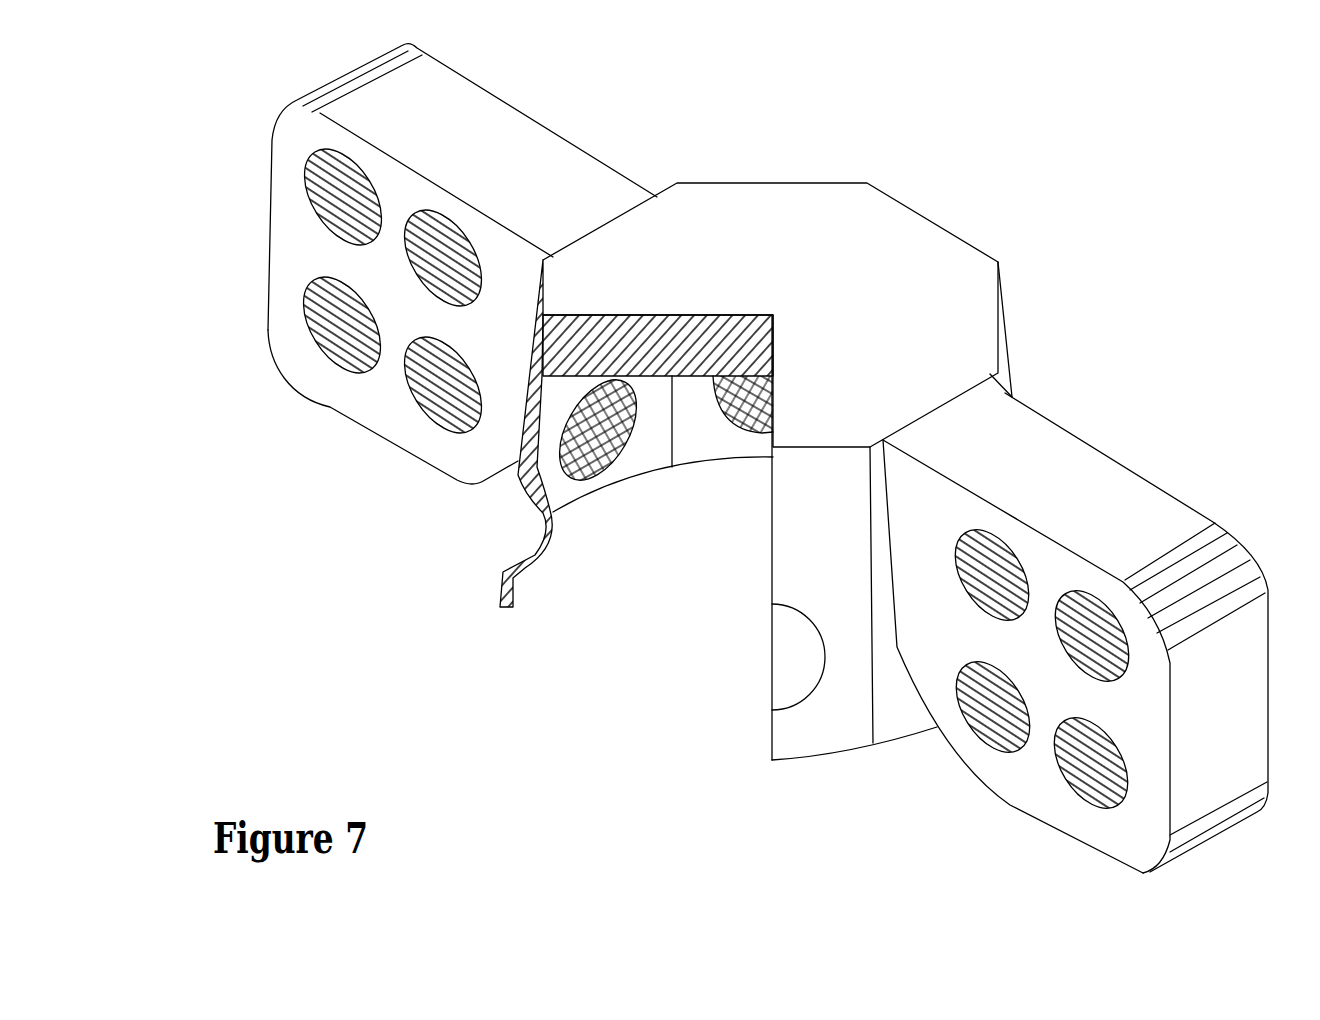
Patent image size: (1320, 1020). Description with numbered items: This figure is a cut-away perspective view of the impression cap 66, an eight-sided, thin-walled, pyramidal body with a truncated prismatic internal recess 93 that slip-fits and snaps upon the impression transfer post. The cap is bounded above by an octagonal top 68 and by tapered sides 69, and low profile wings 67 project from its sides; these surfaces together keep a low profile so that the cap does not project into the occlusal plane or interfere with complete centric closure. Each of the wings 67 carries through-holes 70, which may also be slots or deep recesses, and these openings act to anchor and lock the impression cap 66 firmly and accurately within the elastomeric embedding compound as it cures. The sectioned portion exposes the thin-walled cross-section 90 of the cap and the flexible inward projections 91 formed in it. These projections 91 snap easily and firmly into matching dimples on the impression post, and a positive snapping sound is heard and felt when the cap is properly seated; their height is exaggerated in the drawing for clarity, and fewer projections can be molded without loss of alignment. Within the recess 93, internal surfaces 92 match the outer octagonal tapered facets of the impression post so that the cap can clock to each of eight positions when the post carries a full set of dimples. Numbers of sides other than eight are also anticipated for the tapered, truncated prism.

The impression cap 66 is at (955, 210).
The wings 67 is at (477, 123).
The octagonal top 68 is at (760, 228).
The tapered sides 69 is at (818, 738).
The through-holes 70 is at (325, 357).
The thin-walled cross-section 90 is at (537, 517).
The projections 91 is at (580, 480).
The internal surfaces 92 is at (690, 445).
The truncated prismatic internal recess 93 is at (712, 653).